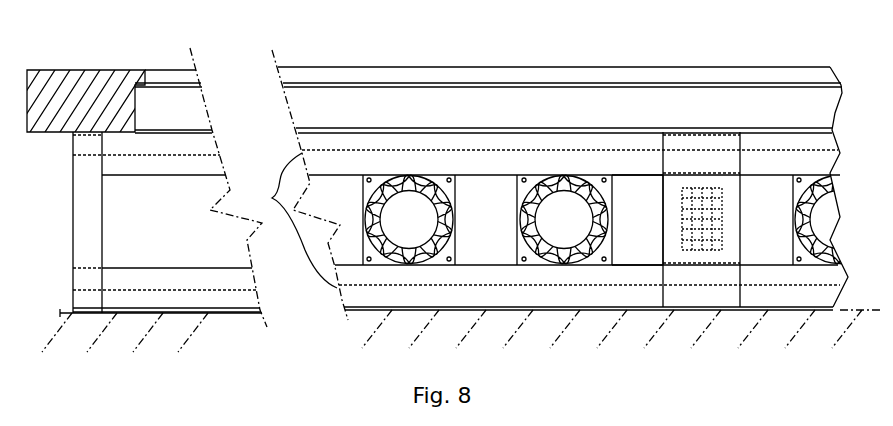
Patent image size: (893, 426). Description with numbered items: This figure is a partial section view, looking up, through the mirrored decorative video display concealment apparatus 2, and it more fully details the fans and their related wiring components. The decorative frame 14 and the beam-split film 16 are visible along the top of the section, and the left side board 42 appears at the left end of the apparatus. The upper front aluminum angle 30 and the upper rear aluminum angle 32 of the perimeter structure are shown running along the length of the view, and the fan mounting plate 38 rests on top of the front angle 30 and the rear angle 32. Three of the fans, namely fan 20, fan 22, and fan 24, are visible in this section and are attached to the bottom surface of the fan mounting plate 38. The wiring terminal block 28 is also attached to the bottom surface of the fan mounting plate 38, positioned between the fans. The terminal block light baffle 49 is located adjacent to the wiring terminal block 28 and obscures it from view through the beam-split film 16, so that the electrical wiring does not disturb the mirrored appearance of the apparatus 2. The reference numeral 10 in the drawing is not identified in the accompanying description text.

The mirrored decorative video display concealment apparatus 2 is at (246, 386).
The base / floor 10 is at (60, 315).
The decorative frame 14 is at (76, 70).
The beam-split film 16 is at (355, 83).
The fan 20 is at (363, 205).
The fan 22 is at (517, 208).
The fan 24 is at (795, 215).
The wiring terminal block 28 is at (683, 225).
The upper front aluminum angle 30 is at (546, 128).
The upper rear aluminum angle 32 is at (185, 315).
The fan mounting plate 38 is at (292, 220).
The left side board 42 is at (73, 222).
The terminal block light baffle 49 is at (663, 210).